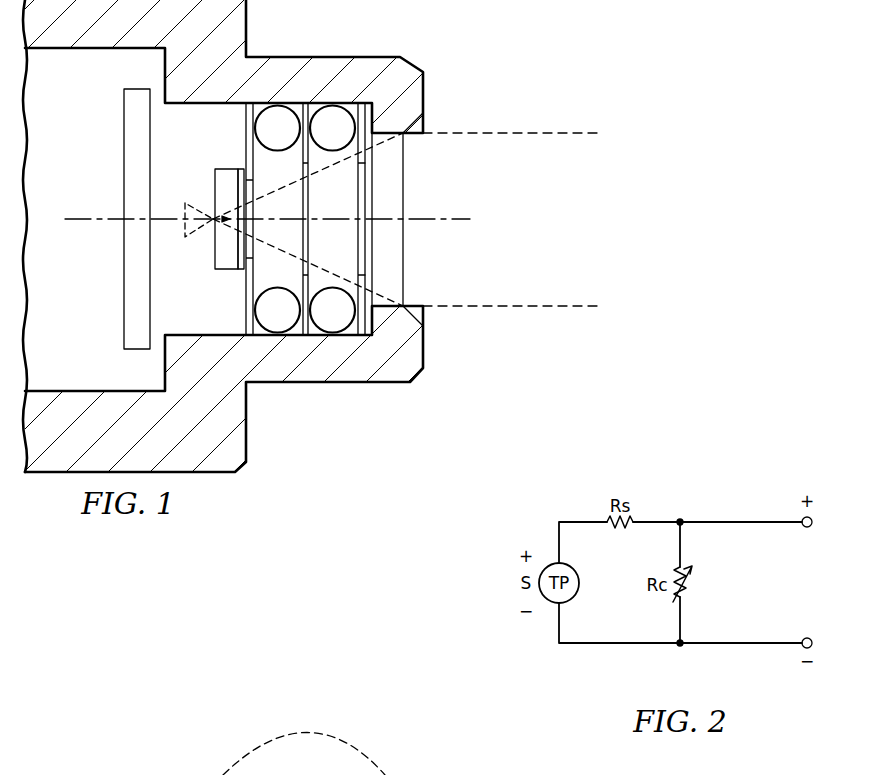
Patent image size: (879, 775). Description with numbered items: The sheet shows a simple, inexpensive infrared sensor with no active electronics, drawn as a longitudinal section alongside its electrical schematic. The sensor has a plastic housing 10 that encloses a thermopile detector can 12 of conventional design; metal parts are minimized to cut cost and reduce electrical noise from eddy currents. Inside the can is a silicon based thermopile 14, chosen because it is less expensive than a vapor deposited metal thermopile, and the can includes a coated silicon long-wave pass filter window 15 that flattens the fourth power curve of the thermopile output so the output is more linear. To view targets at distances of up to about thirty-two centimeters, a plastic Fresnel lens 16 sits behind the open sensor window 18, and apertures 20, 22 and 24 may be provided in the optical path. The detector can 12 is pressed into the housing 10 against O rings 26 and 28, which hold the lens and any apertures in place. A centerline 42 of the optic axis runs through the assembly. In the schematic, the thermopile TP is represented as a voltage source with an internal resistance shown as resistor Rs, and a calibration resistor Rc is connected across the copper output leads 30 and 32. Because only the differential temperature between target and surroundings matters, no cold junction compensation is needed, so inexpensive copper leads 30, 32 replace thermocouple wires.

In FIG. 1, the plastic housing 10 is at (423, 100).
In FIG. 1, the thermopile detector can 12 is at (140, 350).
In FIG. 1, the silicon based thermopile 14 is at (177, 214).
In FIG. 1, the coated silicon long-wave pass filter window 15 is at (232, 272).
In FIG. 1, the plastic Fresnel lens 16 is at (373, 194).
In FIG. 1, the open sensor window 18 is at (423, 243).
In FIG. 1, the aperture 20 is at (250, 285).
In FIG. 1, the aperture 22 is at (300, 150).
In FIG. 1, the aperture 24 is at (357, 150).
In FIG. 1, the O ring 26 is at (279, 117).
In FIG. 1, the O ring 28 is at (333, 117).
In FIG. 2, the copper output lead 30 is at (740, 521).
In FIG. 2, the copper output lead 32 is at (740, 644).
In FIG. 1, the centerline 42 is at (477, 219).